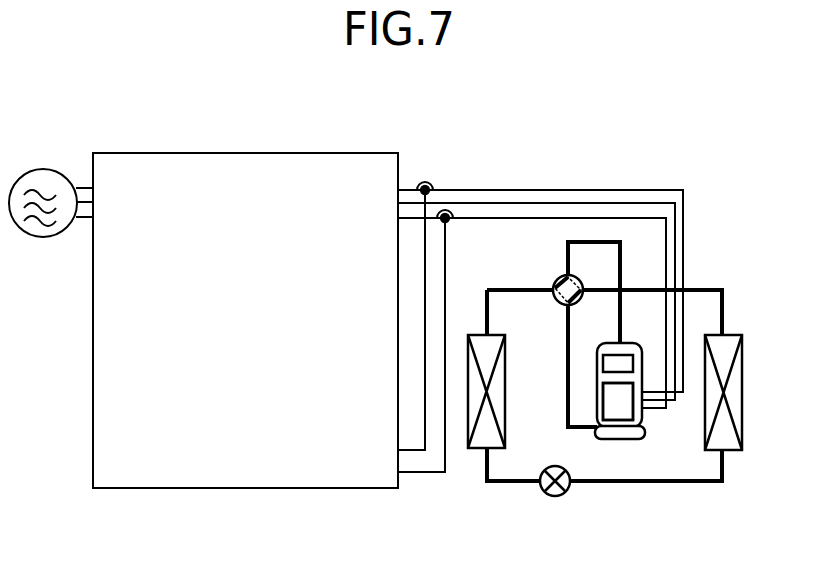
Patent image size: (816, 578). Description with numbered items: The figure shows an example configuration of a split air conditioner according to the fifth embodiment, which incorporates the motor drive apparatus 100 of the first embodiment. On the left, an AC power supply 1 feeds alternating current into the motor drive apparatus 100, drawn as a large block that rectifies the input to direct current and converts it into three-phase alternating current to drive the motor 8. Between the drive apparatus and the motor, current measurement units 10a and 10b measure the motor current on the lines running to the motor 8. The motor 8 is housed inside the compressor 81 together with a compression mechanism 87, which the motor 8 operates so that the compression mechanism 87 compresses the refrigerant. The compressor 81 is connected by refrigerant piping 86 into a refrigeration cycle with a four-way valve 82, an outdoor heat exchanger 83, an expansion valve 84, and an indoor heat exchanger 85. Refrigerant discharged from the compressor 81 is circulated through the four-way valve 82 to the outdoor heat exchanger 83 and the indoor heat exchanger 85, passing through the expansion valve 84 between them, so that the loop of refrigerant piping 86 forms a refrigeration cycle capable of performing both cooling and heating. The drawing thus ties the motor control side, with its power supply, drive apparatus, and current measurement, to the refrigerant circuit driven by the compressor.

The AC power supply 1 is at (45, 169).
The motor drive apparatus 100 is at (252, 153).
The current measurement unit 10a is at (429, 181).
The current measurement unit 10b is at (447, 225).
The motor 8 is at (620, 416).
The compressor 81 is at (648, 429).
The four-way valve 82 is at (555, 296).
The outdoor heat exchanger 83 is at (478, 452).
The expansion valve 84 is at (555, 497).
The indoor heat exchanger 85 is at (728, 335).
The refrigerant piping 86 is at (638, 483).
The compression mechanism 87 is at (604, 351).